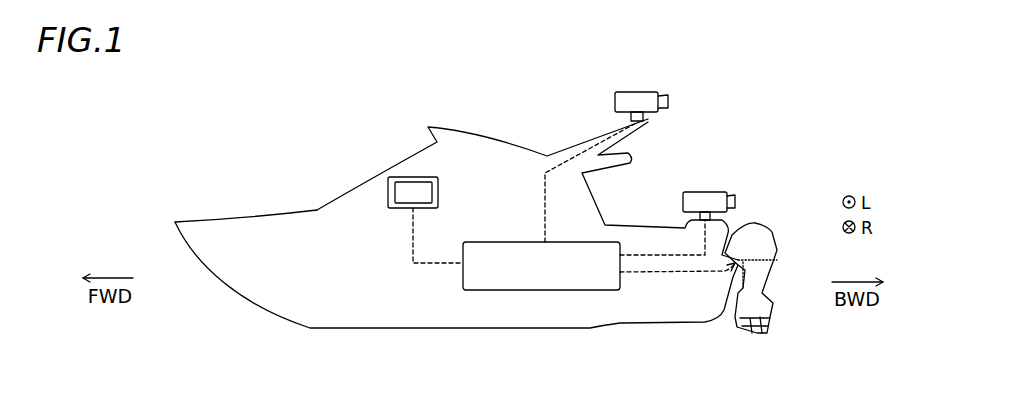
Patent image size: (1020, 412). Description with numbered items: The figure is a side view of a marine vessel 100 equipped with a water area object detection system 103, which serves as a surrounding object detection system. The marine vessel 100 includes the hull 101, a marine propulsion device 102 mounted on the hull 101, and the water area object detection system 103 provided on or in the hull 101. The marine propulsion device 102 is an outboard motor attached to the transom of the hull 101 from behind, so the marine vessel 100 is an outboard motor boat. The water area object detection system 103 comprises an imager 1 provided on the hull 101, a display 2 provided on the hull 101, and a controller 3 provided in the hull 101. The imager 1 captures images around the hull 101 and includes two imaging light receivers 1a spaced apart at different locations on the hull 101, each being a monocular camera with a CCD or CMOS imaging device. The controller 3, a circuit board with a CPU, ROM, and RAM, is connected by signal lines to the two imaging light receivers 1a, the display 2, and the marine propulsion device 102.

The marine vessel 100 is at (456, 207).
The hull 101 is at (205, 222).
The marine propulsion device 102 is at (767, 223).
The water area object detection system 103 is at (515, 300).
The imager 1 is at (648, 88).
The imaging light receiver 1a is at (630, 96).
The display 2 is at (398, 175).
The controller 3 is at (508, 238).